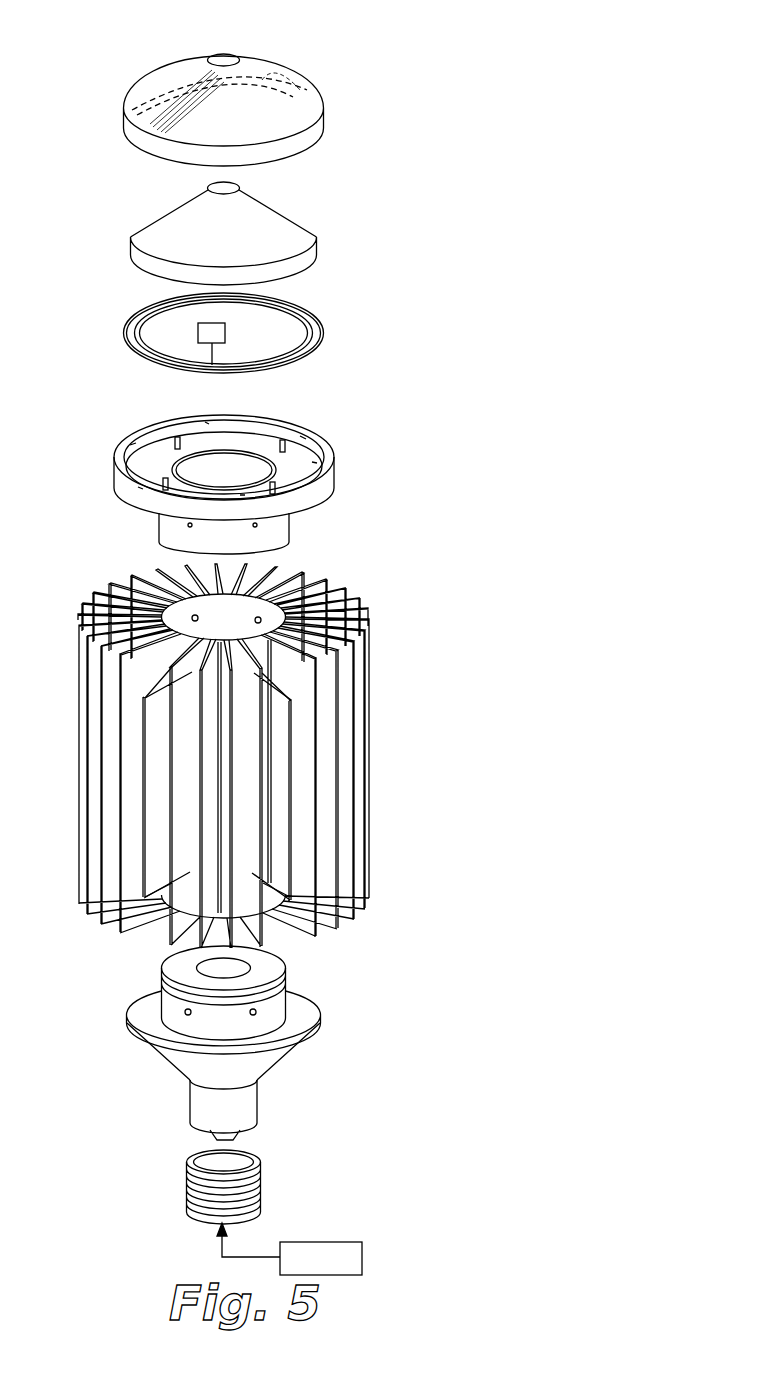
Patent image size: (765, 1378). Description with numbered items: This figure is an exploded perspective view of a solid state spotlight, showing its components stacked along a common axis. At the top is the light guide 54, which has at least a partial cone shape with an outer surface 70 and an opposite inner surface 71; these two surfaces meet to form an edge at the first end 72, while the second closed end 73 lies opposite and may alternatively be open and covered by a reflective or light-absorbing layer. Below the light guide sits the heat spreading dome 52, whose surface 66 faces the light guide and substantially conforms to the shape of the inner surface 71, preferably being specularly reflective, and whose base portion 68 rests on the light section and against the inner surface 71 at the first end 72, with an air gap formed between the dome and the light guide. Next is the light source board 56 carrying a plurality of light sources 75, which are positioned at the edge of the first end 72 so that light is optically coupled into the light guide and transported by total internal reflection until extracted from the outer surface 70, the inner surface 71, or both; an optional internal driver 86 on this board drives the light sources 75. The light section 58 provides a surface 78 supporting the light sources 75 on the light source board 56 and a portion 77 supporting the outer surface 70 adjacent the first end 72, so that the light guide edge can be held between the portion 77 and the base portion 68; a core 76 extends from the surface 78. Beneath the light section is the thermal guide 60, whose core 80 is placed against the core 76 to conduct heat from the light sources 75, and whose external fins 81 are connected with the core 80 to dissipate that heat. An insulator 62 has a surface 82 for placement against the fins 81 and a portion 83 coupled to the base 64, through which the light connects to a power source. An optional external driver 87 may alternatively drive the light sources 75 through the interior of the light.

The light guide 54 is at (236, 88).
The outer surface 70 is at (148, 80).
The inner surface 71 is at (268, 78).
The first end 72 is at (312, 142).
The second closed end 73 is at (222, 57).
The heat spreading dome 52 is at (222, 237).
The surface 66 is at (165, 212).
The base portion 68 is at (150, 263).
The light source board 56 is at (228, 338).
The light sources 75 is at (130, 352).
The driver 86 is at (226, 333).
The light section 58 is at (228, 472).
The portion 77 is at (125, 490).
The surface 78 is at (150, 455).
The core 76 is at (160, 525).
The thermal guide 60 is at (255, 743).
The core 80 is at (275, 575).
The external fins 81 is at (347, 827).
The insulator 62 is at (230, 1043).
The surface 82 is at (140, 1005).
The portion 83 is at (250, 1103).
The base 64 is at (262, 1190).
The external driver 87 is at (365, 1257).